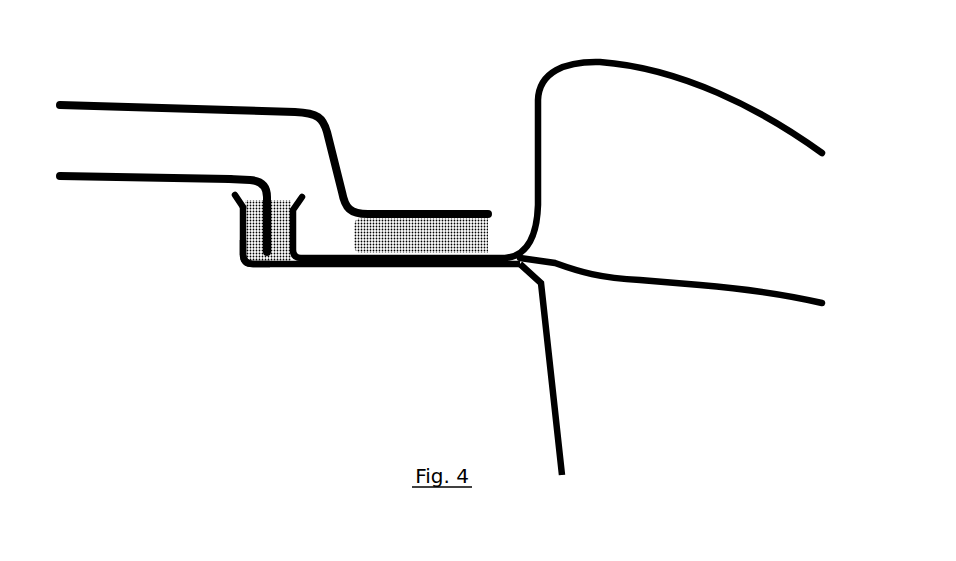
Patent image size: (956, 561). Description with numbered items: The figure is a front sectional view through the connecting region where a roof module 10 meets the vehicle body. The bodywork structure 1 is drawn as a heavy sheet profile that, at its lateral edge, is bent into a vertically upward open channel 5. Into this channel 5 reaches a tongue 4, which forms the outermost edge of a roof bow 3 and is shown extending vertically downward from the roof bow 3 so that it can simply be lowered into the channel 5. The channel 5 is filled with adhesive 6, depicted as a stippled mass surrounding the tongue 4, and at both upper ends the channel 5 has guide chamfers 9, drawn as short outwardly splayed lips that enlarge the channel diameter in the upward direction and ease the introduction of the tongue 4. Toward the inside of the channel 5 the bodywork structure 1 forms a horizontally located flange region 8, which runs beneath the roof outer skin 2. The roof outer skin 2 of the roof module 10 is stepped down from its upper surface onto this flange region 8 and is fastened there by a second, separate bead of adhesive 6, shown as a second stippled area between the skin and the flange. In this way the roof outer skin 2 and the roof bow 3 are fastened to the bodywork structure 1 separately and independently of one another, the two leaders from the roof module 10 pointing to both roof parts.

The bodywork structure 1 is at (592, 273).
The roof outer skin 2 is at (325, 115).
The roof bow 3 is at (197, 182).
The tongue 4 is at (240, 258).
The channel 5 is at (242, 232).
The adhesive 6 is at (392, 238).
The flange region 8 is at (422, 270).
The guide chamfers 9 is at (232, 203).
The roof module 10 is at (147, 175).